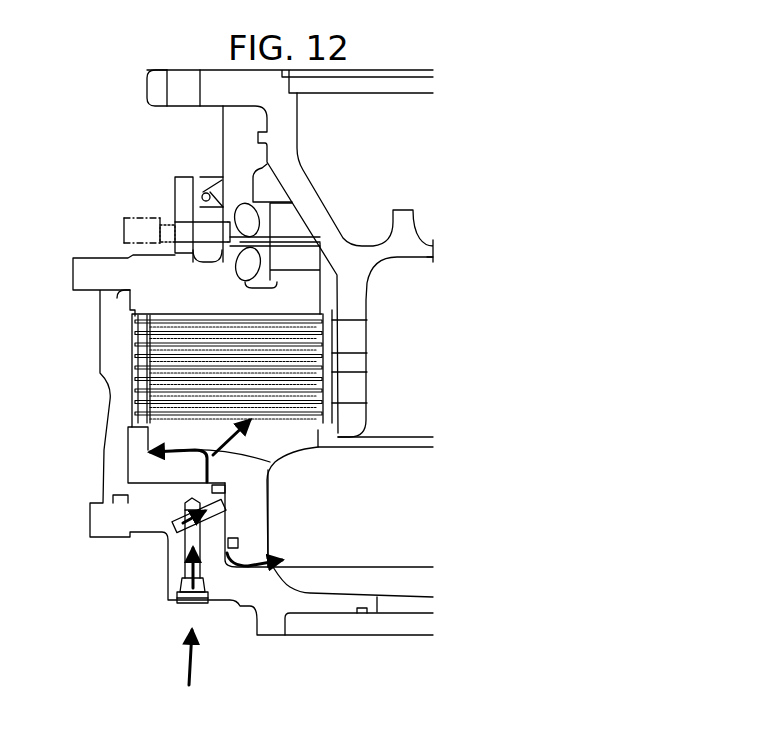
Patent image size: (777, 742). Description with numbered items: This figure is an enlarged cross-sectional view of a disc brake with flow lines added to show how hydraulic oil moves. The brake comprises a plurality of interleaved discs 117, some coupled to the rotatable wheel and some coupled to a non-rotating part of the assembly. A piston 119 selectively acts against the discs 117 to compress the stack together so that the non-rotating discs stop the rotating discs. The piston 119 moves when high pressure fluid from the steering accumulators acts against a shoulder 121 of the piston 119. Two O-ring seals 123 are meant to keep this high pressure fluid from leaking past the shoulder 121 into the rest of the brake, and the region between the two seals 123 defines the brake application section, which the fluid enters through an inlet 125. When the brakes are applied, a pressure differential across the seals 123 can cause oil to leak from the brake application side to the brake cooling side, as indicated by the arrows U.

The interleaved discs 117 is at (280, 368).
The piston 119 is at (252, 518).
The shoulder 121 is at (223, 503).
The O-ring seals 123 is at (210, 489).
The inlet 125 is at (177, 528).
The arrows U is at (130, 464).